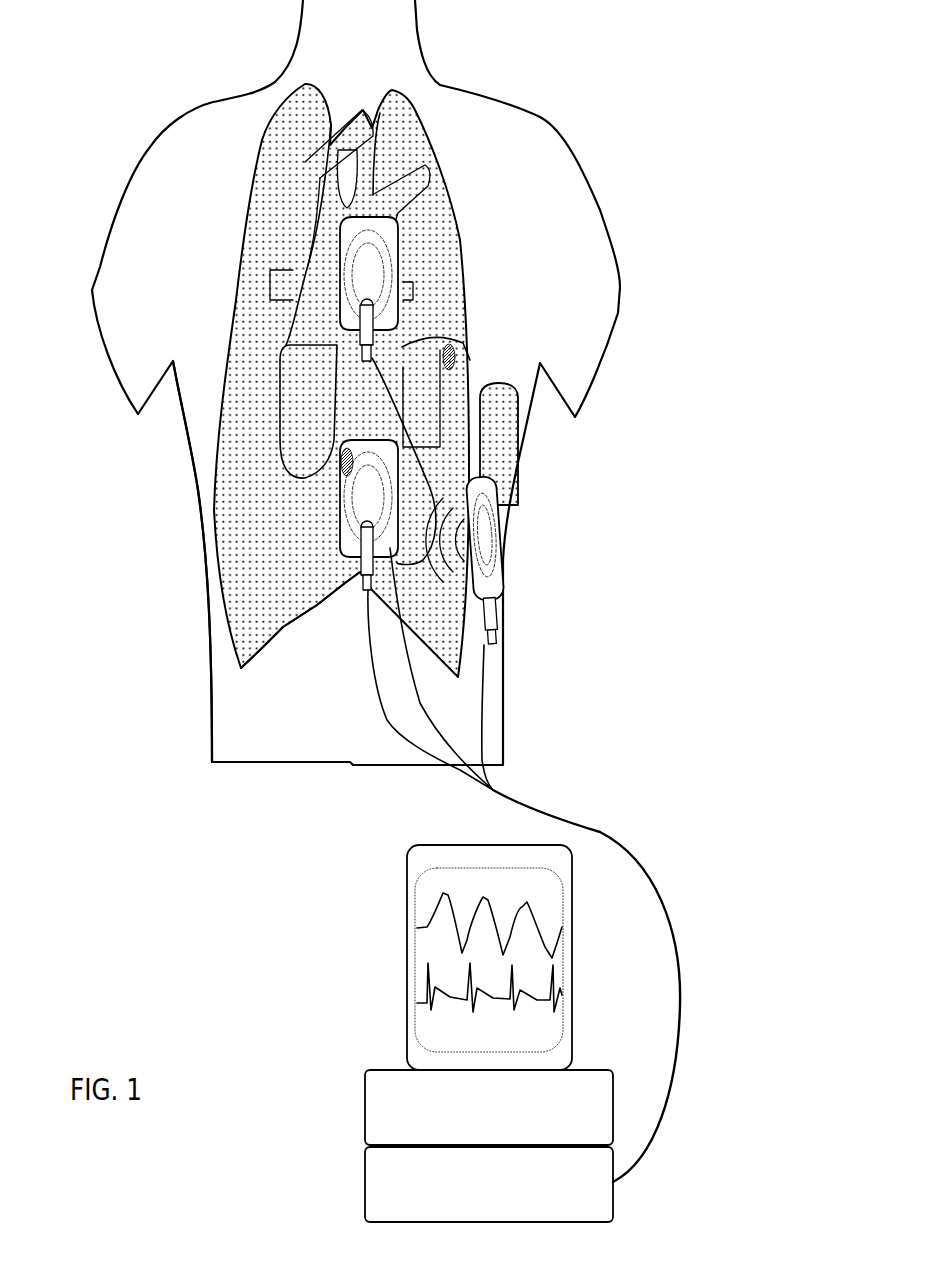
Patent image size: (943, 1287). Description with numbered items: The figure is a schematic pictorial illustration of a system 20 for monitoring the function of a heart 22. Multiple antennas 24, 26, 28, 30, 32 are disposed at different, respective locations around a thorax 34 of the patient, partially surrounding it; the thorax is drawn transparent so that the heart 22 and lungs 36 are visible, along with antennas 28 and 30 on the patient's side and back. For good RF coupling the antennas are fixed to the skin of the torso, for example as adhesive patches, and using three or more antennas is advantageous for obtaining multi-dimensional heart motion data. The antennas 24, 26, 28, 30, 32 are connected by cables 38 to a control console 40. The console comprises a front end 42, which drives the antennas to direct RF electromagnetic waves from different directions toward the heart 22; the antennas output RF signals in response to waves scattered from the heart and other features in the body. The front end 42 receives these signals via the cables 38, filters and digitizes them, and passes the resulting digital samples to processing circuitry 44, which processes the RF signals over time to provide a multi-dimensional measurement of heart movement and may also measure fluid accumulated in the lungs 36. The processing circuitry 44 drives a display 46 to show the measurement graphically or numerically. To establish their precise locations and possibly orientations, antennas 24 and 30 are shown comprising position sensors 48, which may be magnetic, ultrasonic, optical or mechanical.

The system 20 is at (83, 183).
The heart 22 is at (330, 552).
The antenna 24 is at (360, 572).
The antenna 26 is at (490, 550).
The antenna 28 is at (511, 381).
The antenna 30 is at (418, 348).
The antenna 32 is at (402, 246).
The thorax 34 is at (196, 478).
The lungs 36 is at (238, 239).
The cables 38 is at (472, 743).
The control console 40 is at (470, 1033).
The front end 42 is at (365, 1188).
The processing circuitry 44 is at (365, 1113).
The display 46 is at (573, 958).
The position sensors 48 is at (455, 350).